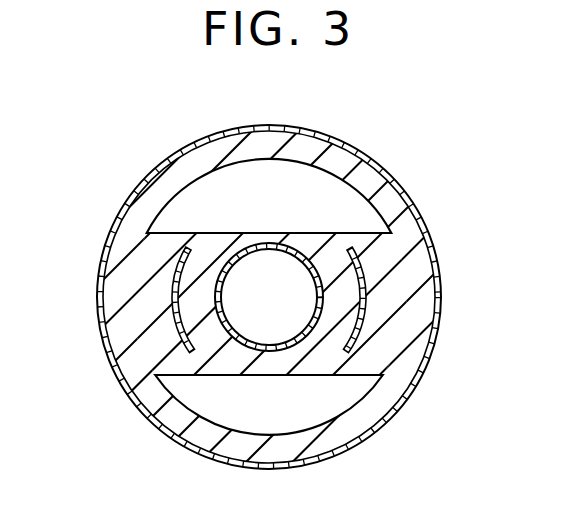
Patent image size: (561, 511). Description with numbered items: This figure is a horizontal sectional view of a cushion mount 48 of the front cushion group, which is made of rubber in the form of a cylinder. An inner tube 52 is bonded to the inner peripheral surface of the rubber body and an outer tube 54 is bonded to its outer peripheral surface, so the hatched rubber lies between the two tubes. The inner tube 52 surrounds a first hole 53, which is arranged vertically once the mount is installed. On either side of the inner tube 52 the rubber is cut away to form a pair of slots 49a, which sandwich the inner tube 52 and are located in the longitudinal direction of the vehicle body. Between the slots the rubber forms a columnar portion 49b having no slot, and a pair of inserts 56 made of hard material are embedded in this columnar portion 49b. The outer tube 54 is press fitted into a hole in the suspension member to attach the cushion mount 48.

The cushion mount 48 is at (437, 241).
The slots 49a is at (344, 190).
The columnar portion 49b is at (190, 301).
The inner tube 52 is at (229, 260).
The first hole 53 is at (272, 336).
The outer tube 54 is at (438, 326).
The inserts 56 is at (367, 296).